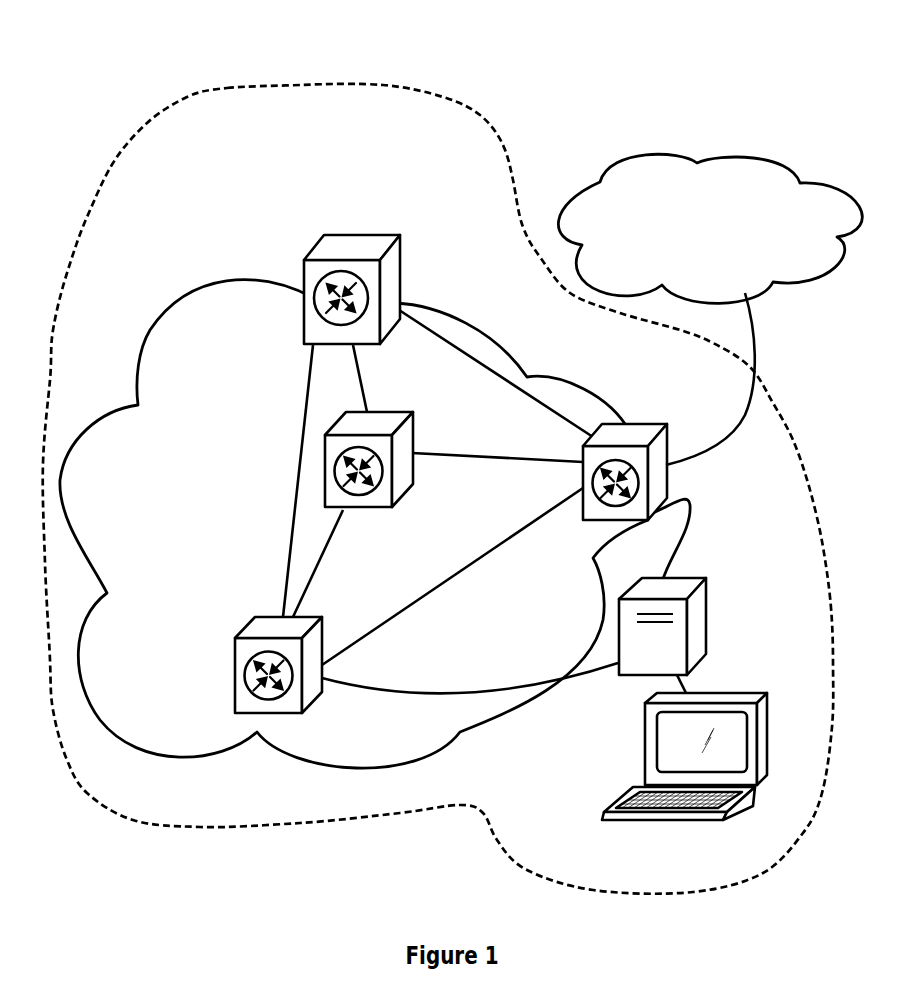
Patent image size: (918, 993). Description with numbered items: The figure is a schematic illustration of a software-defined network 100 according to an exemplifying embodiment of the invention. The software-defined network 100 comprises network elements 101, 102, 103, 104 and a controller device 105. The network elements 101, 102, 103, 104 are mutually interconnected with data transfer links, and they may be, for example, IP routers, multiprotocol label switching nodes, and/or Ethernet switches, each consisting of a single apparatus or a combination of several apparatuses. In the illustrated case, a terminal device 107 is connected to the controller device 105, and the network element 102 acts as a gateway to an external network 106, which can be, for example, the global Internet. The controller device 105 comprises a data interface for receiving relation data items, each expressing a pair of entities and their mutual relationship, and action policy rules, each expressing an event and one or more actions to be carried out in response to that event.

The software-defined network 100 is at (224, 90).
The network element 101 is at (235, 702).
The network element 102 is at (640, 425).
The network element 103 is at (375, 412).
The network element 104 is at (312, 250).
The controller device 105 is at (678, 587).
The external network 106 is at (662, 236).
The terminal device 107 is at (716, 693).